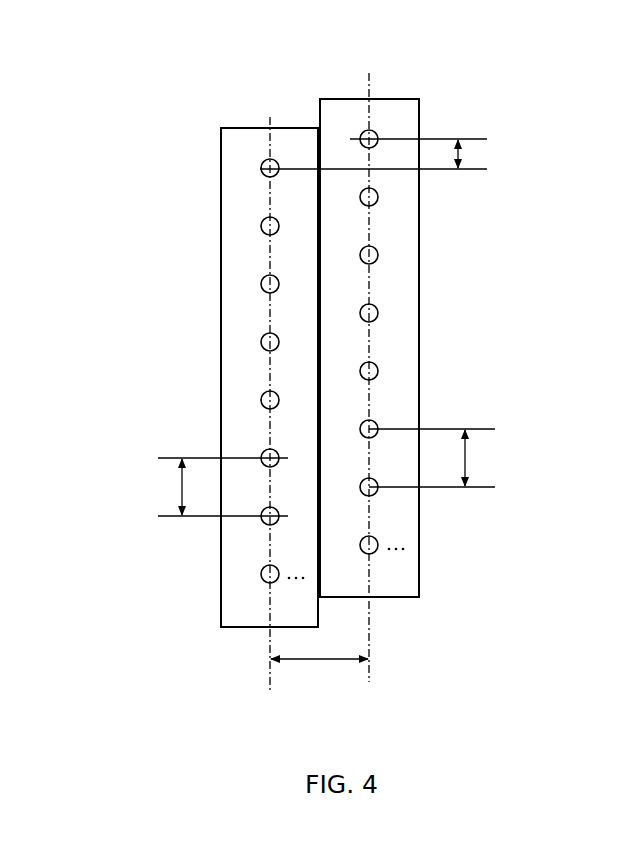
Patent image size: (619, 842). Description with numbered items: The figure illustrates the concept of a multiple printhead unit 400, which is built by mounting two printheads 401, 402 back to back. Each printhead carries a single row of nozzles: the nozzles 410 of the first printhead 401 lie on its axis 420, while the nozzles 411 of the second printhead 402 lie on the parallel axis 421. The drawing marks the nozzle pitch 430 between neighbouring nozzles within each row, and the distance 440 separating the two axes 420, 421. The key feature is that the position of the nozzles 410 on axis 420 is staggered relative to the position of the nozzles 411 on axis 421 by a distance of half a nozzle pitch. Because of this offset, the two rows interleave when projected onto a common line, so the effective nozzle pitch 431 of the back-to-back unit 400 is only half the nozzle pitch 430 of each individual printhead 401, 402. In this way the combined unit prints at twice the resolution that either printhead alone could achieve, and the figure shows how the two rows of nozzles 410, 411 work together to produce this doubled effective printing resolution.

The multiple printhead unit 400 is at (173, 98).
The printhead 401 is at (257, 128).
The printhead 402 is at (352, 99).
The nozzles 410 is at (259, 169).
The nozzles 411 is at (378, 198).
The axis 420 is at (268, 682).
The axis 421 is at (370, 622).
The pitch between adjacent light sources 430 is at (323, 472).
The effective nozzle pitch 431 is at (385, 154).
The distance between row axes 440 is at (319, 649).